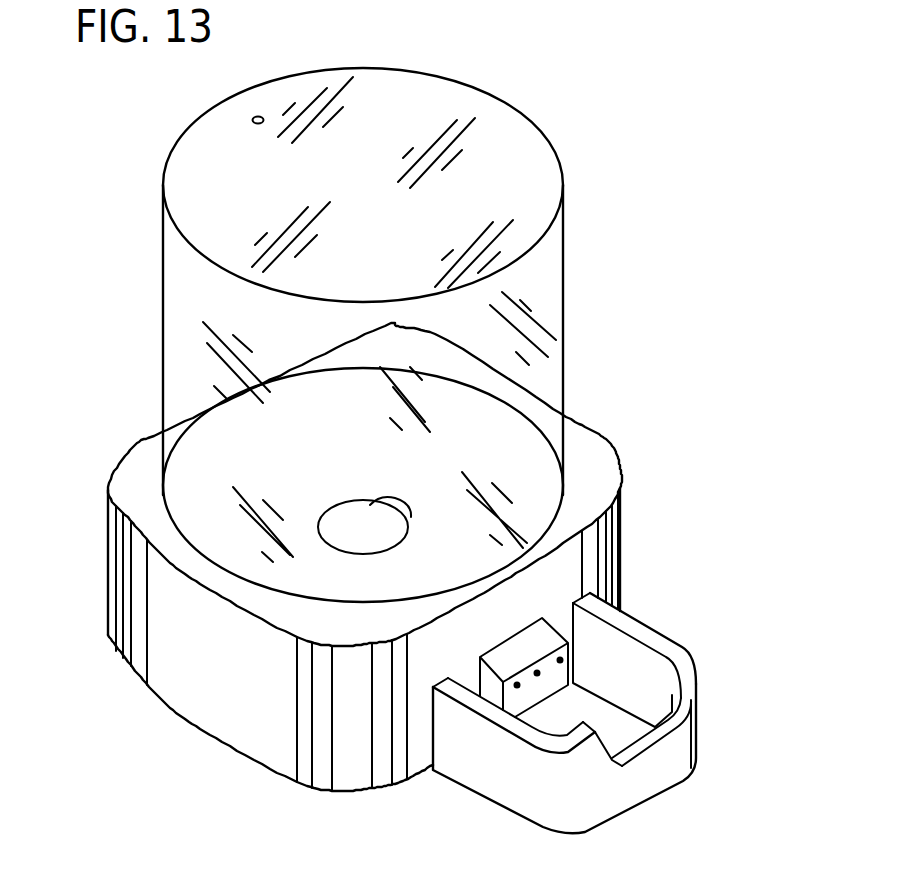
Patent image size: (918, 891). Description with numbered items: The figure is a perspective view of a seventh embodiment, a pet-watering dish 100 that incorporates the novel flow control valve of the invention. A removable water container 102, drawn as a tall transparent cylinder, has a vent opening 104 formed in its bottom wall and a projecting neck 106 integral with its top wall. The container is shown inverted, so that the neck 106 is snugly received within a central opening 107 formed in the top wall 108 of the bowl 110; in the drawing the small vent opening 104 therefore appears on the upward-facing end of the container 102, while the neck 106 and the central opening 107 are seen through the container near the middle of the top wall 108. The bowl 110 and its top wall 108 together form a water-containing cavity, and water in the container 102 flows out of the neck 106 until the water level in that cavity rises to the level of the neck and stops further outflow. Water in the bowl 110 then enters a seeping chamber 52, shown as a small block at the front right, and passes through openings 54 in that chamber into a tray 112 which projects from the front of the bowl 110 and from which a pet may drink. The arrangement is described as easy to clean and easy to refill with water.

The pet-watering dish 100 is at (640, 65).
The removable water container 102 is at (566, 304).
The vent opening 104 is at (259, 114).
The projecting neck 106 is at (347, 523).
The central opening 107 is at (379, 509).
The top wall 108 is at (597, 466).
The bowl 110 is at (198, 685).
The tray 112 is at (705, 690).
The seeping chamber 52 is at (543, 640).
The openings 54 is at (560, 660).